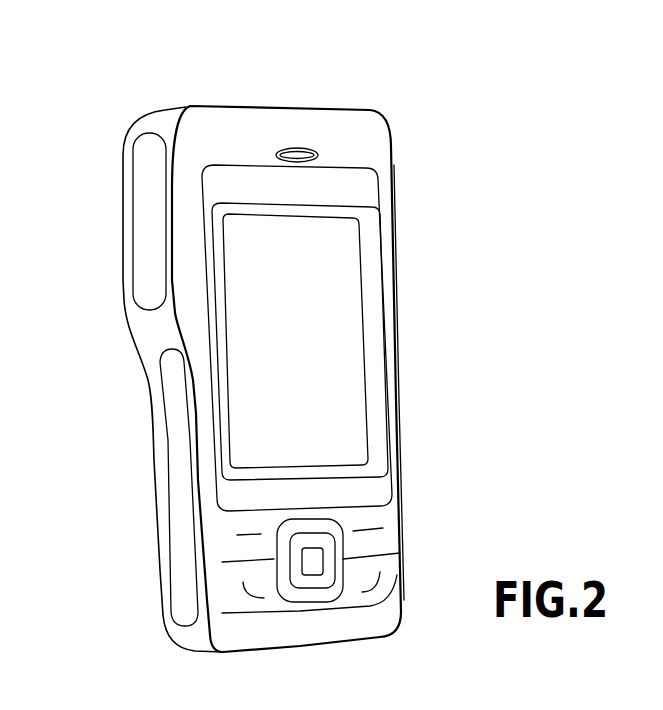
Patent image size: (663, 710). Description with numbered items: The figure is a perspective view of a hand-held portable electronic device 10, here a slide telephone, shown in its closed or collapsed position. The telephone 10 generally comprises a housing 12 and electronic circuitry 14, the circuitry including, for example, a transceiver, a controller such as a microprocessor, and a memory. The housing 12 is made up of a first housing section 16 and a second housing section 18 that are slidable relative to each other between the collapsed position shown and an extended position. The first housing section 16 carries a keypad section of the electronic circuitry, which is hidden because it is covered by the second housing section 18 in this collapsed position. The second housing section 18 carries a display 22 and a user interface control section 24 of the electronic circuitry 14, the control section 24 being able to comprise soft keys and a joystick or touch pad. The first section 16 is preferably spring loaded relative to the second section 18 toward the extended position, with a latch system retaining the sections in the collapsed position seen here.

The hand-held portable electronic device 10 is at (106, 63).
The housing 12 is at (392, 146).
The electronic circuitry 14 is at (348, 270).
The first housing section 16 is at (132, 333).
The second housing section 18 is at (175, 452).
The display 22 is at (340, 407).
The user interface control section 24 is at (343, 552).